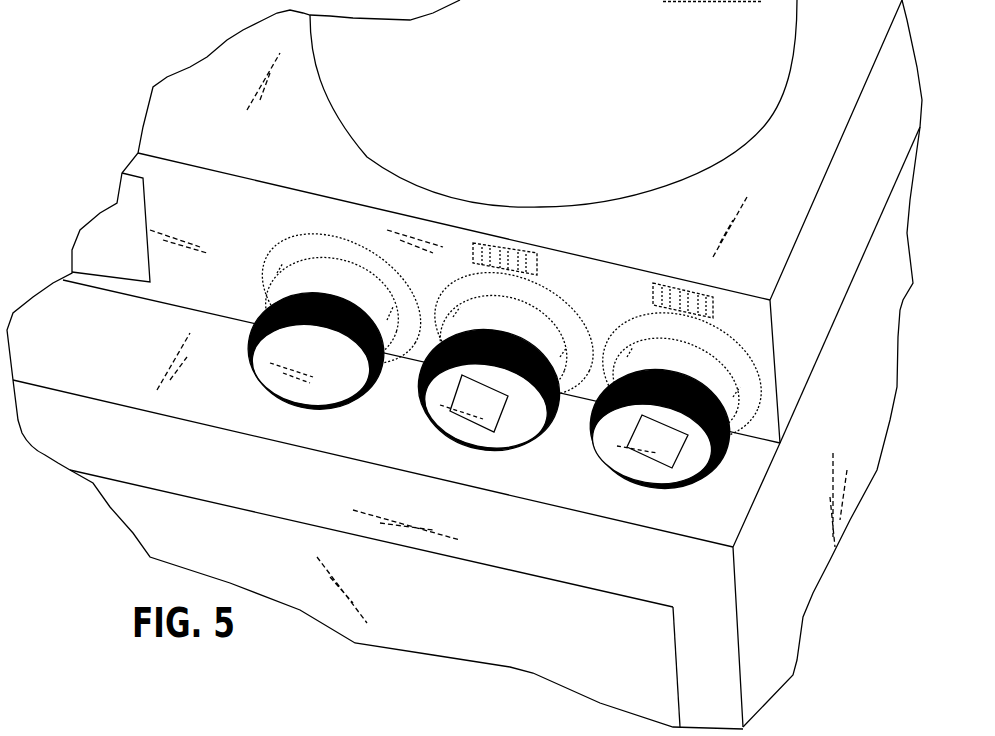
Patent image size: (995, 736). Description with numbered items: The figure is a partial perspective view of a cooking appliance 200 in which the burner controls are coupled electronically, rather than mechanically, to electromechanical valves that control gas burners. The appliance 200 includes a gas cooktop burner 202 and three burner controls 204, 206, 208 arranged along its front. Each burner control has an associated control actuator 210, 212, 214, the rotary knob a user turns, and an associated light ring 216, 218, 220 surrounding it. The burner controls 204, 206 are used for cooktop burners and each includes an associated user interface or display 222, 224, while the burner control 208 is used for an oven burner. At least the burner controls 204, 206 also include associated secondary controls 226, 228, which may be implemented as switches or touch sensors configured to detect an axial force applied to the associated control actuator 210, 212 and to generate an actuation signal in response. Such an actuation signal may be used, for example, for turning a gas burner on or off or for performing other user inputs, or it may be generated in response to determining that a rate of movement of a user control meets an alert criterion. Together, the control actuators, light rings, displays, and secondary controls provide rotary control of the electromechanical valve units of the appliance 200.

The cooking appliance 200 is at (93, 48).
The gas cooktop burner 202 is at (348, 115).
The burner control 204 is at (450, 422).
The burner control 206 is at (630, 463).
The burner control 208 is at (293, 388).
The control actuator 210 is at (478, 438).
The control actuator 212 is at (641, 482).
The control actuator 214 is at (325, 402).
The light ring 216 is at (449, 302).
The light ring 218 is at (622, 338).
The light ring 220 is at (262, 269).
The display 222 is at (545, 255).
The display 224 is at (693, 295).
The secondary control 226 is at (505, 446).
The secondary control 228 is at (658, 472).